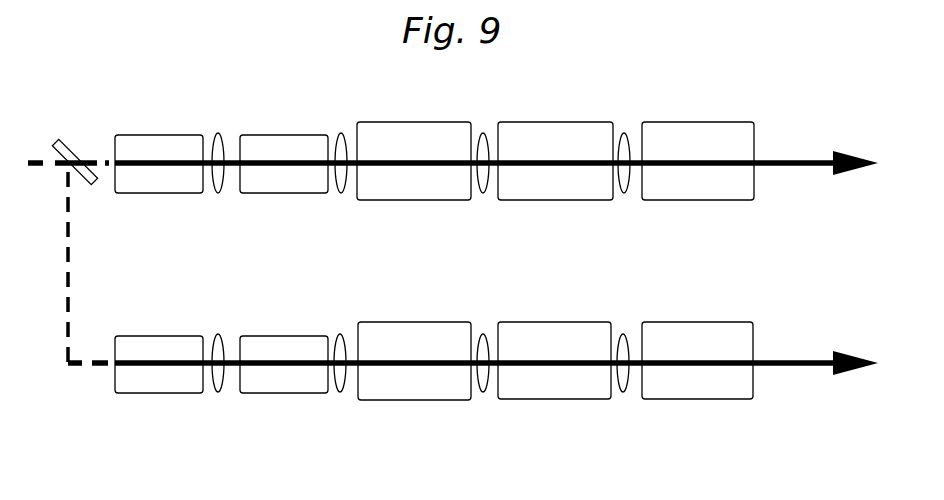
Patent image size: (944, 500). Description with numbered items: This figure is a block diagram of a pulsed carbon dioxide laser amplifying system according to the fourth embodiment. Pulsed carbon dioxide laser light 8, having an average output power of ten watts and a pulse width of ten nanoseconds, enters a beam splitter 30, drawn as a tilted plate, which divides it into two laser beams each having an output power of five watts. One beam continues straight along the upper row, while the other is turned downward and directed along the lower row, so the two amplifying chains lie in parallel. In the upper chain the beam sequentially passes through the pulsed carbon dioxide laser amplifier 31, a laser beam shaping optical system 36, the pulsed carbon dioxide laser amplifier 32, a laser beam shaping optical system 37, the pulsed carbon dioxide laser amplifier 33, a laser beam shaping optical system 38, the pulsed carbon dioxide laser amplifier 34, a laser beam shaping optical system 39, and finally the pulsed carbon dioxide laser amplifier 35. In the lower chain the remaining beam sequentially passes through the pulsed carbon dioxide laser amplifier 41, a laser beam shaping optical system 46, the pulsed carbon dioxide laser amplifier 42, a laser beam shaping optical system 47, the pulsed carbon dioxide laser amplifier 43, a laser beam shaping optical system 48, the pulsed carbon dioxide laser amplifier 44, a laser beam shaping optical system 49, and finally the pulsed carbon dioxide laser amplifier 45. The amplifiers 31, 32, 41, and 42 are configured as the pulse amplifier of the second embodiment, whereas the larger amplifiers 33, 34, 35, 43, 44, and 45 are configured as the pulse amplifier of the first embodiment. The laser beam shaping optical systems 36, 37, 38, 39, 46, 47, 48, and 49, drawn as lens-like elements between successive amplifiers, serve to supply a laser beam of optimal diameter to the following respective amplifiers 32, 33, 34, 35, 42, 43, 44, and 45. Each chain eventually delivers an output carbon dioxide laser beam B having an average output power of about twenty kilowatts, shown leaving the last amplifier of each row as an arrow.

The laser beam 8 is at (45, 160).
The beam splitter 30 is at (93, 186).
The pulsed CO2 laser amplifier 31 is at (148, 135).
The pulsed CO2 laser amplifier 32 is at (266, 135).
The pulsed CO2 laser amplifier 33 is at (388, 122).
The pulsed CO2 laser amplifier 34 is at (513, 122).
The pulsed CO2 laser amplifier 35 is at (666, 122).
The laser beam shaping optical system 36 is at (218, 194).
The laser beam shaping optical system 37 is at (341, 194).
The laser beam shaping optical system 38 is at (483, 194).
The laser beam shaping optical system 39 is at (624, 194).
The pulsed CO2 laser amplifier 41 is at (148, 336).
The pulsed CO2 laser amplifier 42 is at (266, 336).
The pulsed CO2 laser amplifier 43 is at (388, 322).
The pulsed CO2 laser amplifier 44 is at (513, 322).
The pulsed CO2 laser amplifier 45 is at (665, 322).
The laser beam shaping optical system 46 is at (218, 394).
The laser beam shaping optical system 47 is at (340, 394).
The laser beam shaping optical system 48 is at (483, 394).
The laser beam shaping optical system 49 is at (623, 394).
The output beam B is at (790, 156).